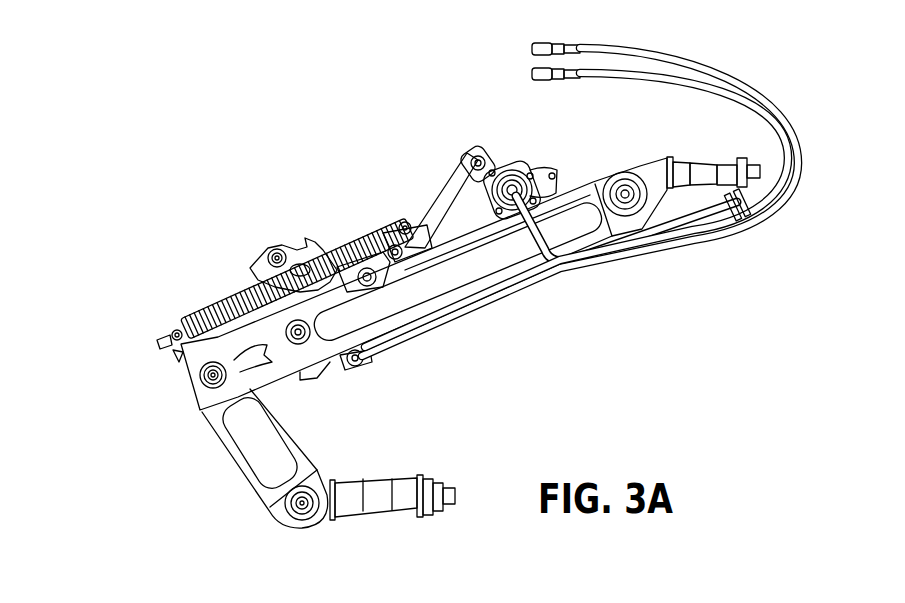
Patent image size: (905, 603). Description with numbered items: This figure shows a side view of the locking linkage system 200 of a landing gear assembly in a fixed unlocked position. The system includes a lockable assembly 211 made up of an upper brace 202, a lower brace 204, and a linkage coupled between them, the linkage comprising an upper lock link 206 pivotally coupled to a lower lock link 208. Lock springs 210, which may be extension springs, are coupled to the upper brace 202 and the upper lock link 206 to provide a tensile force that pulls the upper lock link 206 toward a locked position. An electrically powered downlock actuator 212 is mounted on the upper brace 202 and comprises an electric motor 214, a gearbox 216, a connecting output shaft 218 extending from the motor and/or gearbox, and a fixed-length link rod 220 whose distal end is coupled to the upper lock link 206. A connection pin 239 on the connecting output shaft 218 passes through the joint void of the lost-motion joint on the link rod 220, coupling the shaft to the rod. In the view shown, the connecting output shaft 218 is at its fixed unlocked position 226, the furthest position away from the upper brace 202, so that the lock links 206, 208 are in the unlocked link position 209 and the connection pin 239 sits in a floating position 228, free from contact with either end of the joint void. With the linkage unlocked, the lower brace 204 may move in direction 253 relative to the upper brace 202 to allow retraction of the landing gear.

The locking linkage system 200 is at (210, 133).
The upper brace 202 is at (518, 273).
The lower brace 204 is at (290, 421).
The upper lock link 206 is at (305, 242).
The lower lock link 208 is at (253, 283).
The unlocked link position 209 is at (273, 230).
The lock springs 210 is at (228, 312).
The lockable assembly 211 is at (555, 400).
The downlock actuator 212 is at (465, 87).
The electric motor 214 is at (522, 178).
The gearbox 216 is at (557, 167).
The connecting output shaft 218 is at (505, 170).
The link rod 220 is at (445, 185).
The fixed unlocked position 226 is at (441, 136).
The floating position 228 is at (464, 140).
The connection pin 239 is at (494, 173).
The direction 253 is at (63, 313).